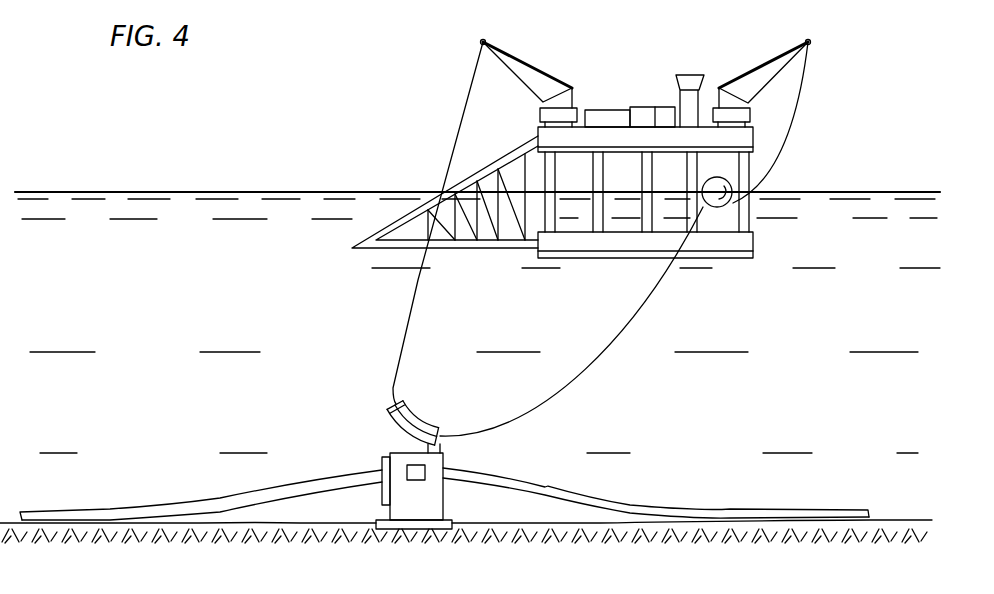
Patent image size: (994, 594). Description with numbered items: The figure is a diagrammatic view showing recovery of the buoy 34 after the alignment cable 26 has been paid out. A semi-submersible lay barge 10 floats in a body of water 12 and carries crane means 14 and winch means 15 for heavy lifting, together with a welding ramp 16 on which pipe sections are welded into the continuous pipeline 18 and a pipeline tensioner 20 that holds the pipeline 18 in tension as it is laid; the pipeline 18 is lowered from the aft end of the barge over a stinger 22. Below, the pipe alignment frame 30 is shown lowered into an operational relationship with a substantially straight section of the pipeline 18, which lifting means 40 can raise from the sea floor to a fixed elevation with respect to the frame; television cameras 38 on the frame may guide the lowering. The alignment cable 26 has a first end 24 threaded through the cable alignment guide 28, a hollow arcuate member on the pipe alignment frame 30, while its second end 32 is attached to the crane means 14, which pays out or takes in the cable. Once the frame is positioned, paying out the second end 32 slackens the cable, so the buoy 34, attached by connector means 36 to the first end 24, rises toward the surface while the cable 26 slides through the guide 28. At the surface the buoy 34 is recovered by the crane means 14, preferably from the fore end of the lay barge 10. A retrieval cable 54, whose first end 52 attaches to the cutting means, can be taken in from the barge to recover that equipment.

The lay barge 10 is at (699, 72).
The body of water 12 is at (212, 189).
The crane means 14 is at (506, 50).
The winch means 15 is at (662, 106).
The welding ramp 16 is at (606, 110).
The pipeline 18 is at (174, 502).
The pipeline tensioner 20 is at (640, 105).
The stinger 22 is at (490, 251).
The first end of alignment cable 24 is at (712, 210).
The alignment cable 26 is at (412, 303).
The cable alignment guide 28 is at (430, 420).
The pipe alignment frame 30 is at (444, 467).
The second end of alignment cable 32 is at (573, 88).
The buoy 34 is at (718, 178).
The connector means 36 is at (717, 212).
The television cameras 38 is at (409, 466).
The lifting means 40 is at (382, 461).
The first end of retrieval cable 52 is at (728, 205).
The retrieval cable 54 is at (799, 86).